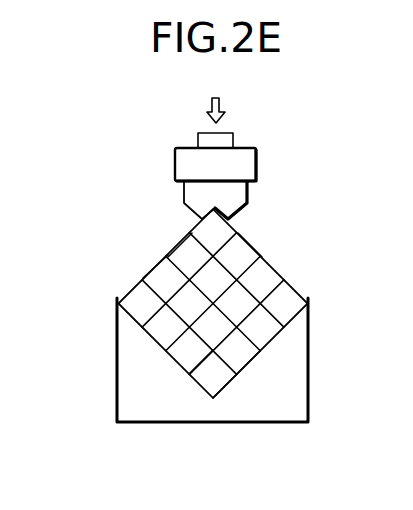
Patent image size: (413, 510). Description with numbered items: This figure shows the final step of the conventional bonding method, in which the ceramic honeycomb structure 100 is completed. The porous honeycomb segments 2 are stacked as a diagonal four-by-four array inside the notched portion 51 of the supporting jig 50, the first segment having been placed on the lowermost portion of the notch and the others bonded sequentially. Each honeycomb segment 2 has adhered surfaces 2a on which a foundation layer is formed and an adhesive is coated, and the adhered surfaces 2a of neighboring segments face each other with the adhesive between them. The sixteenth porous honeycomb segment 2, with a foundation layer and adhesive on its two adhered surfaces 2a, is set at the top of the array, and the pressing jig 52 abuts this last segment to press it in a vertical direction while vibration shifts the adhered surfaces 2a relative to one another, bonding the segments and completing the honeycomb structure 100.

The porous honeycomb segment 2 is at (141, 305).
The adhered surface 2a is at (200, 246).
The supporting jig 50 is at (113, 412).
The notched portion 51 is at (219, 378).
The pressing jig 52 is at (236, 189).
The ceramic honeycomb structure 100 is at (297, 268).